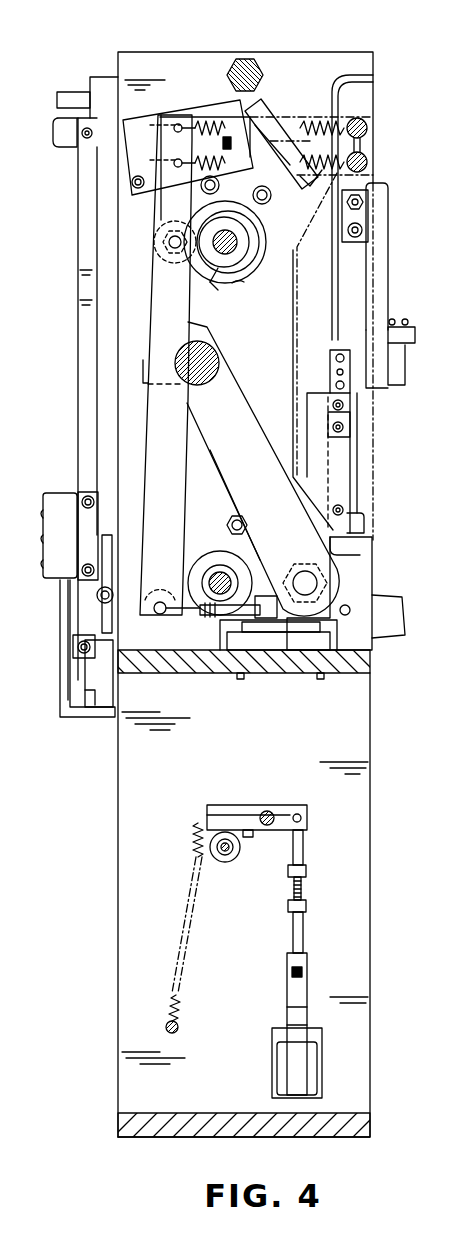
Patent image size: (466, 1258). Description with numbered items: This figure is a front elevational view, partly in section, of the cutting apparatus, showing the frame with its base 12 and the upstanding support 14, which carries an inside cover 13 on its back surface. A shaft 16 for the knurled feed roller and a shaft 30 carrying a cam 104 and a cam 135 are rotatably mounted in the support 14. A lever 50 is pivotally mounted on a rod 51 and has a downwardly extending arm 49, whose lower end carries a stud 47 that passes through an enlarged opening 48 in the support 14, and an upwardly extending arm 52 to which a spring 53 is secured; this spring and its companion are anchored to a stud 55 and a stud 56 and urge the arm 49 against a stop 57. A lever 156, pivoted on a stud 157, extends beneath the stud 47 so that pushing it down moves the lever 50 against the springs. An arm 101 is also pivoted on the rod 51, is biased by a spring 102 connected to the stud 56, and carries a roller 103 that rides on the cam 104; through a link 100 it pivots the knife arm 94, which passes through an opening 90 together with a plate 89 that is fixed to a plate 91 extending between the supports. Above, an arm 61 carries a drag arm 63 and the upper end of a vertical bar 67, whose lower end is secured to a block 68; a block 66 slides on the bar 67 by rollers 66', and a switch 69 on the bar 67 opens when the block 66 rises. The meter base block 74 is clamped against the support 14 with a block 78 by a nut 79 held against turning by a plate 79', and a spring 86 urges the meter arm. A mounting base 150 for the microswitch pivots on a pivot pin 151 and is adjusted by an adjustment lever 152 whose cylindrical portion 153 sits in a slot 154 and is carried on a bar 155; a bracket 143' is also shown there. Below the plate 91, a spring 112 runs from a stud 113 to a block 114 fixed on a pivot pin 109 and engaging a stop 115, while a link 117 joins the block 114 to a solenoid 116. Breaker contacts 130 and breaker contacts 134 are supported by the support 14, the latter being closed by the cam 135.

The base 12 is at (372, 1122).
The inside cover 13 is at (372, 473).
The upstanding support 14 is at (117, 413).
The shaft 16 is at (222, 570).
The shaft 30 is at (228, 252).
The stud 47 is at (318, 582).
The enlarged opening 48 is at (345, 572).
The arm 49 is at (220, 458).
The lever 50 is at (245, 375).
The rod 51 is at (213, 352).
The upwardly extending arm 52 is at (143, 372).
The spring 53 is at (305, 122).
The stud 55 is at (366, 122).
The stud 56 is at (368, 160).
The stop 57 is at (228, 522).
The arm 61 is at (70, 140).
The drag arm 63 is at (75, 92).
The block 66 is at (67, 654).
The rollers 66' is at (64, 596).
The bar 67 is at (76, 330).
The block 68 is at (100, 692).
The switch 69 is at (62, 495).
The meter base block 74 is at (356, 350).
The block 78 is at (352, 493).
The nut 79 is at (372, 418).
The plate 79' is at (376, 433).
The spring 86 is at (398, 322).
The plate 89 is at (295, 642).
The opening 90 is at (350, 673).
The plate 91 is at (178, 675).
The arm 94 is at (272, 634).
The link 100 is at (195, 618).
The arm 101 is at (150, 485).
The spring 102 is at (318, 188).
The roller 103 is at (162, 222).
The cam 104 is at (212, 276).
The pivot pin 109 is at (265, 810).
The spring 112 is at (192, 852).
The stud 113 is at (178, 1031).
The block 114 is at (222, 805).
The stop 115 is at (228, 860).
The solenoid 116 is at (270, 1072).
The link 117 is at (303, 852).
The breaker contacts 130 is at (272, 95).
The breaker contacts 134 is at (160, 117).
The cam 135 is at (270, 232).
The bracket 143' is at (415, 370).
The mounting base 150 is at (388, 198).
The pivot pin 151 is at (345, 372).
The adjustment lever 152 is at (362, 145).
The cylindrical shaped portion 153 is at (362, 192).
The slot 154 is at (362, 230).
The bar 155 is at (358, 265).
The lever 156 is at (392, 640).
The stud 157 is at (350, 612).